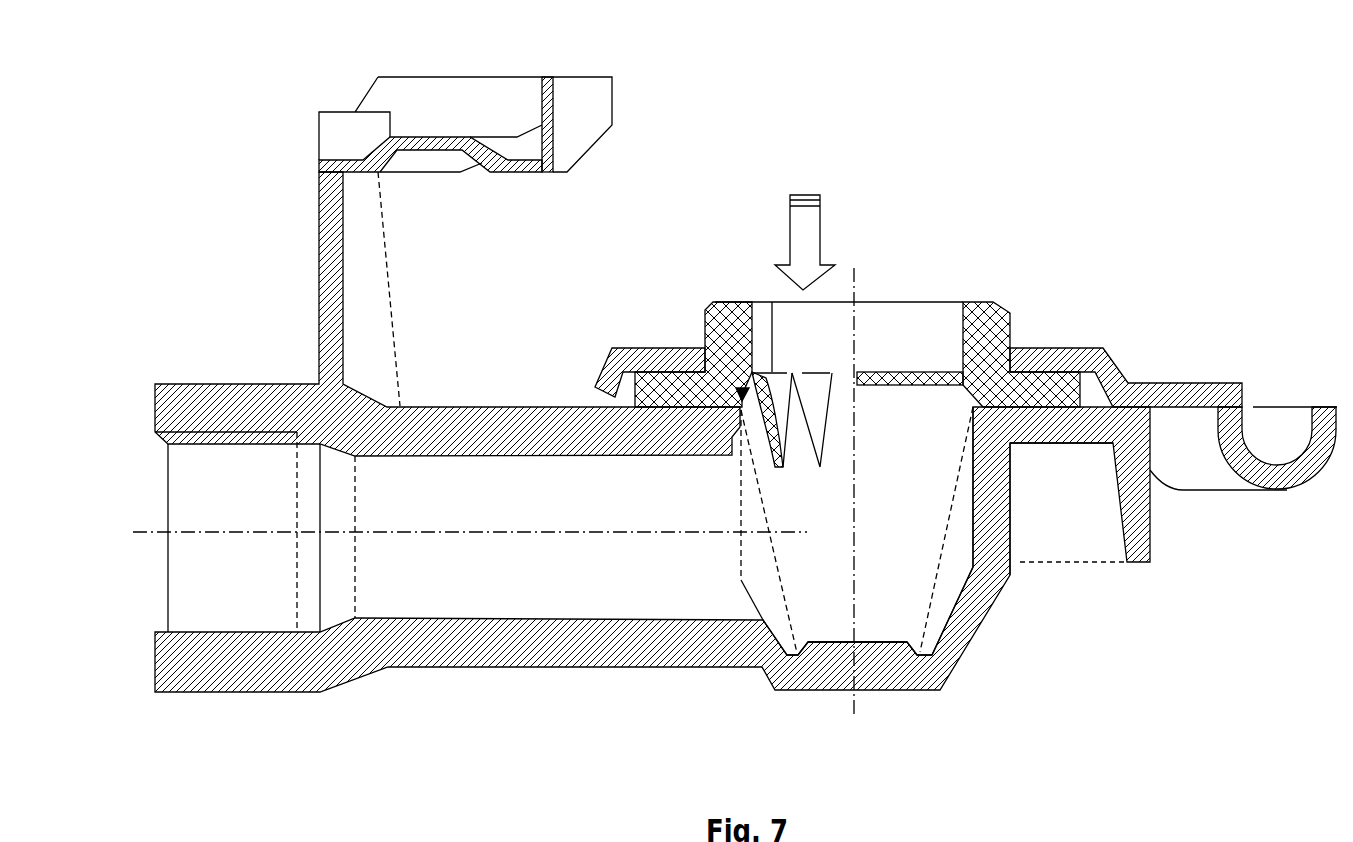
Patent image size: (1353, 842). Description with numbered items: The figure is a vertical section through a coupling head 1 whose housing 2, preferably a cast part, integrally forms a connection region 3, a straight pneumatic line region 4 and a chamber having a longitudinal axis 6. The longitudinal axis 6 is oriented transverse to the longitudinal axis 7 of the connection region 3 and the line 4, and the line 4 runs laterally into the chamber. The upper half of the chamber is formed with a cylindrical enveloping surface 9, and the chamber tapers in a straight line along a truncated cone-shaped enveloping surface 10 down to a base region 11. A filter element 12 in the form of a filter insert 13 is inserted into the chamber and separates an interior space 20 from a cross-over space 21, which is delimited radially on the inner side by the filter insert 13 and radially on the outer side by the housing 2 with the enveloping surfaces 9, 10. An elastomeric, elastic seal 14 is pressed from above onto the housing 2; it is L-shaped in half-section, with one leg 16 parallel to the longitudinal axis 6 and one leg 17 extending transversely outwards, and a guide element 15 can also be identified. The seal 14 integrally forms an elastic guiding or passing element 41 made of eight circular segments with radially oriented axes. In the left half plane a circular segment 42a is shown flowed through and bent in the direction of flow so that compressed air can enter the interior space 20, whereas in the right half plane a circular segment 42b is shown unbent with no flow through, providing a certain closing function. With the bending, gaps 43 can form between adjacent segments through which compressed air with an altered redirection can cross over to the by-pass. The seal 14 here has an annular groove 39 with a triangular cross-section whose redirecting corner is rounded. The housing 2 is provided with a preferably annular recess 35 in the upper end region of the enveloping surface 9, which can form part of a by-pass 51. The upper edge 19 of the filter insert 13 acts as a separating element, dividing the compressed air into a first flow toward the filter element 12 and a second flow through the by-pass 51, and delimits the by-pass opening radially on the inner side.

The coupling head 1 is at (870, 222).
The housing 2 is at (608, 650).
The connection region 3 is at (238, 595).
The pneumatic line region 4 is at (528, 595).
The longitudinal axis 6 is at (853, 715).
The longitudinal axis 7 is at (150, 535).
The cylindrical enveloping surface 9 is at (972, 500).
The truncated cone-shaped enveloping surface 10 is at (960, 602).
The base region 11 is at (883, 635).
The filter element 12 is at (779, 565).
The filter insert 13 is at (752, 600).
The seal 14 is at (1000, 312).
The guide element 15 is at (1285, 488).
The leg 16 is at (715, 312).
The leg 17 is at (652, 388).
The edge 19 is at (970, 410).
The interior space 20 is at (836, 612).
The cross-over space 21 is at (757, 563).
The recess 35 is at (985, 425).
The annular groove 39 is at (770, 302).
The guiding or passing element 41 is at (903, 362).
The circular segment 42a is at (757, 392).
The circular segment 42b is at (823, 423).
The gap 43 is at (798, 448).
The by-pass 51 is at (742, 388).